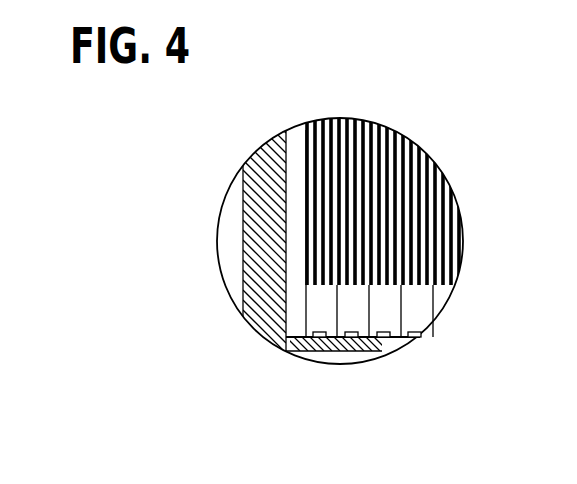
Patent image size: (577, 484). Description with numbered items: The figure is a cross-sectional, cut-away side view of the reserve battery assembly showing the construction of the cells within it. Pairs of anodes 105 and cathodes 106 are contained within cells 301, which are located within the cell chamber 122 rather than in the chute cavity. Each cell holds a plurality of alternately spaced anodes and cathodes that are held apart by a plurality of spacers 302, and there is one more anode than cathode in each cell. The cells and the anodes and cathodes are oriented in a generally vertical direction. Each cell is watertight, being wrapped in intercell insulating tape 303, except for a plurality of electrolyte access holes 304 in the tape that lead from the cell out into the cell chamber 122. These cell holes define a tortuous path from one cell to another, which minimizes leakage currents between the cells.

The cell chamber 122 is at (296, 186).
The spacers 302 is at (328, 152).
The anodes 105 is at (321, 270).
The cells 301 is at (316, 269).
The intercell insulating tape 303 is at (326, 270).
The cathodes 106 is at (330, 288).
The electrolyte access holes 304 is at (402, 336).